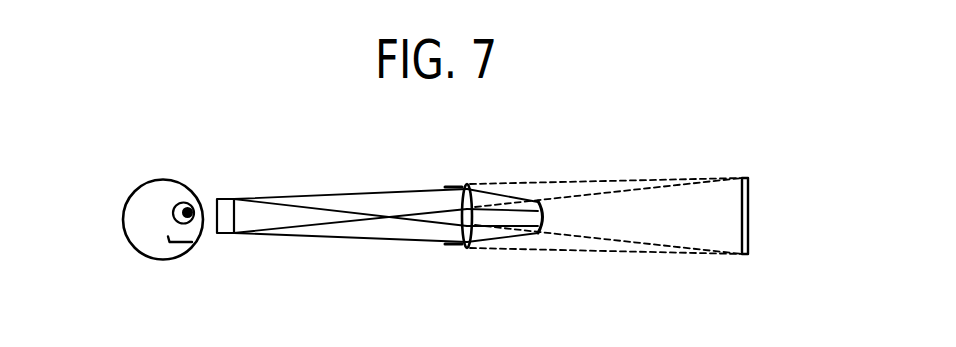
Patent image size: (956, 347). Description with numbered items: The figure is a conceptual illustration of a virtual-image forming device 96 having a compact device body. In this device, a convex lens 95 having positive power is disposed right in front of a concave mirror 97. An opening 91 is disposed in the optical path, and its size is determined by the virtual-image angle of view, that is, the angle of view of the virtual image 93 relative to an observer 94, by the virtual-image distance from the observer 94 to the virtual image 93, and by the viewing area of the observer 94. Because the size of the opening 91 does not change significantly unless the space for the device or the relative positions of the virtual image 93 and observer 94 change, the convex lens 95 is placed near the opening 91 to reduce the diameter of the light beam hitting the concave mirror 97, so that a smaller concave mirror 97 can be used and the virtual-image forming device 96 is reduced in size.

The opening 91 is at (446, 247).
The virtual image 93 is at (749, 232).
The observer 94 is at (123, 223).
The convex lens 95 is at (470, 184).
The virtual-image forming device 96 is at (745, 163).
The concave mirror 97 is at (545, 218).